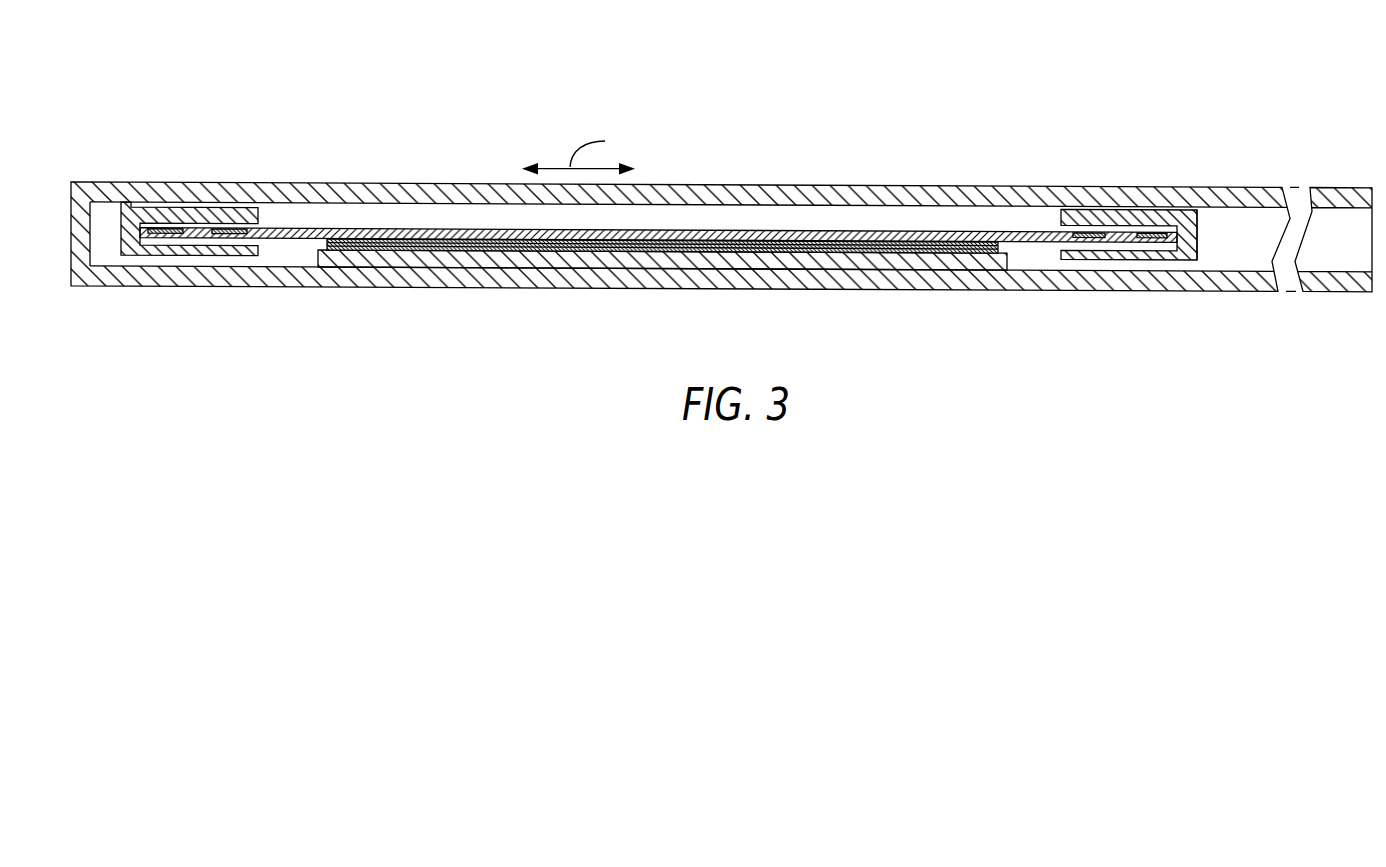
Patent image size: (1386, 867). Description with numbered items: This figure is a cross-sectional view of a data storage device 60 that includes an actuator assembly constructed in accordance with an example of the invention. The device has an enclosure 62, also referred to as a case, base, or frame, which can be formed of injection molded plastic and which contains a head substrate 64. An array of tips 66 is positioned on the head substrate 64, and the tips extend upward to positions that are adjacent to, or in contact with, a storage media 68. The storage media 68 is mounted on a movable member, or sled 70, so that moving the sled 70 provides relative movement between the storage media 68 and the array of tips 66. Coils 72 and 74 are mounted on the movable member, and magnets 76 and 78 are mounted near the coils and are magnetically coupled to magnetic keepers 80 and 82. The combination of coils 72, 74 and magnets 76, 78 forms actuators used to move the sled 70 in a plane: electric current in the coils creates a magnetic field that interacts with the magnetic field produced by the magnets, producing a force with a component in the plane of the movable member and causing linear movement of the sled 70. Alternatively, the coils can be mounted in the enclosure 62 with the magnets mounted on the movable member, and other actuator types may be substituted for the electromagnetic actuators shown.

The data storage device 60 is at (721, 199).
The enclosure 62 is at (1337, 292).
The head substrate 64 is at (487, 260).
The array of tips 66 is at (604, 251).
The storage media 68 is at (712, 230).
The sled 70 is at (781, 231).
The coil 72 is at (226, 233).
The coil 74 is at (1150, 243).
The magnet 76 is at (203, 215).
The magnet 78 is at (1112, 219).
The magnetic keeper 80 is at (121, 223).
The magnetic keeper 82 is at (1195, 236).